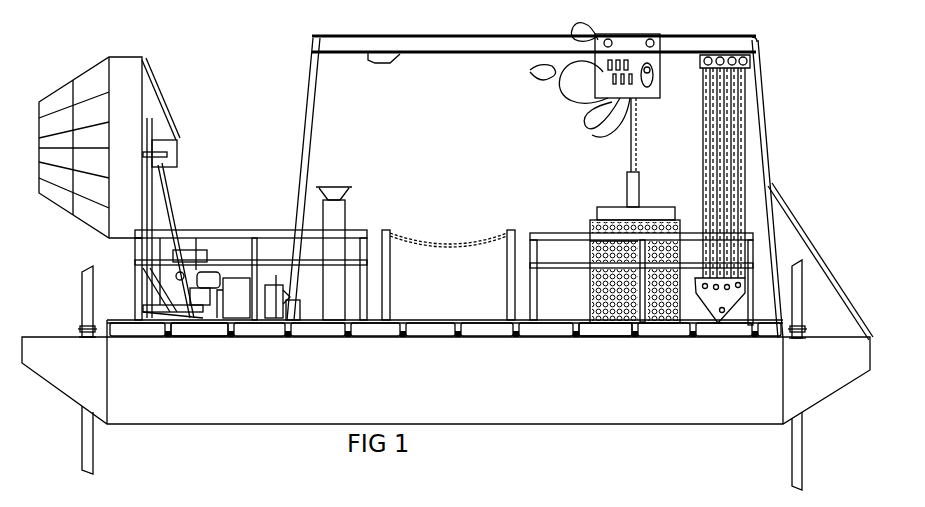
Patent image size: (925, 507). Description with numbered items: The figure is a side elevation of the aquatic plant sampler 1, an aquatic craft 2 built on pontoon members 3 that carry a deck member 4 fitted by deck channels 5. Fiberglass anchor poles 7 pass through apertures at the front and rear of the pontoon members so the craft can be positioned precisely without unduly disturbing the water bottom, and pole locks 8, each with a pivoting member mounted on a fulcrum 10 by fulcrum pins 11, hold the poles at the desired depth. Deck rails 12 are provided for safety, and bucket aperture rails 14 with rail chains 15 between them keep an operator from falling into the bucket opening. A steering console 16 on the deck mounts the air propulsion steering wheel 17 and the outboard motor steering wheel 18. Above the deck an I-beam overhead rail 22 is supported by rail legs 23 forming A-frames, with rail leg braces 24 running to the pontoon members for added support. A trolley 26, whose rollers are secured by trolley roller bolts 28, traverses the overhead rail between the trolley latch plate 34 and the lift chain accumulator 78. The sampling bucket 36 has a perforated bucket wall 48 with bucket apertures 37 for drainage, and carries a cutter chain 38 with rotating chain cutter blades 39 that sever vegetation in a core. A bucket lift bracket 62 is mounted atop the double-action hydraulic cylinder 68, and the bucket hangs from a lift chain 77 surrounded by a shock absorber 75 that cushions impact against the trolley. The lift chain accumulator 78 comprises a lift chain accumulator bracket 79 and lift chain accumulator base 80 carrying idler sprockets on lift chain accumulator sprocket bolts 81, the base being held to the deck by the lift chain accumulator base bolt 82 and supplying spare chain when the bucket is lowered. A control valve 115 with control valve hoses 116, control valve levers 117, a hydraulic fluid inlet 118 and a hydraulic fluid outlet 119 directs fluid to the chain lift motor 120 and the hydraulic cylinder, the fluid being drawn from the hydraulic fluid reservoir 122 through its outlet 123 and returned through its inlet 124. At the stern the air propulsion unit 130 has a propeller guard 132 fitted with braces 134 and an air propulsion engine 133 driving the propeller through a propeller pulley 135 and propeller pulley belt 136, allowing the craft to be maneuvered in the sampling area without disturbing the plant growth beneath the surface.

The aquatic plant sampler 1 is at (252, 80).
The aquatic craft 2 is at (42, 317).
The pontoon members 3 is at (436, 383).
The deck member 4 is at (457, 320).
The deck channels 5 is at (345, 338).
The anchor poles 7 is at (84, 277).
The pole locks 8 is at (82, 339).
The fulcrum 10 is at (90, 334).
The fulcrum pins 11 is at (82, 326).
The deck rails 12 is at (345, 233).
The bucket aperture rails 14 is at (386, 289).
The rail chains 15 is at (456, 234).
The steering console 16 is at (341, 260).
The air propulsion steering wheel 17 is at (322, 190).
The outboard motor steering wheel 18 is at (304, 222).
The overhead rail 22 is at (534, 59).
The rail legs 23 is at (306, 126).
The rail leg braces 24 is at (831, 283).
The trolley 26 is at (622, 40).
The trolley roller bolts 28 is at (652, 38).
The trolley latch plate 34 is at (382, 62).
The sampling bucket 36 is at (587, 251).
The bucket apertures 37 is at (590, 286).
The cutter chain 38 is at (612, 328).
The chain cutter blades 39 is at (600, 362).
The bucket wall 48 is at (670, 281).
The bucket lift bracket 62 is at (641, 208).
The hydraulic cylinder 68 is at (618, 190).
The shock absorber 75 is at (639, 180).
The lift chain 77 is at (630, 150).
The lift chain accumulator 78 is at (700, 148).
The lift chain accumulator bracket 79 is at (735, 55).
The lift chain accumulator base 80 is at (724, 308).
The lift chain accumulator sprocket bolts 81 is at (710, 55).
The lift chain accumulator base bolt 82 is at (730, 300).
The control valve 115 is at (586, 104).
The control valve hoses 116 is at (586, 28).
The control valve levers 117 is at (592, 134).
The control valve hydraulic fluid inlet 118 is at (540, 70).
The control valve hydraulic fluid outlet 119 is at (585, 120).
The chain lift motor 120 is at (697, 92).
The hydraulic fluid reservoir 122 is at (249, 306).
The hydraulic fluid reservoir outlet 123 is at (232, 331).
The hydraulic fluid reservoir inlet 124 is at (269, 326).
The air propulsion unit 130 is at (70, 72).
The propeller guard 132 is at (40, 222).
The air propulsion engine 133 is at (191, 278).
The braces 134 is at (158, 100).
The propeller pulley 135 is at (160, 124).
The propeller pulley belt 136 is at (173, 167).